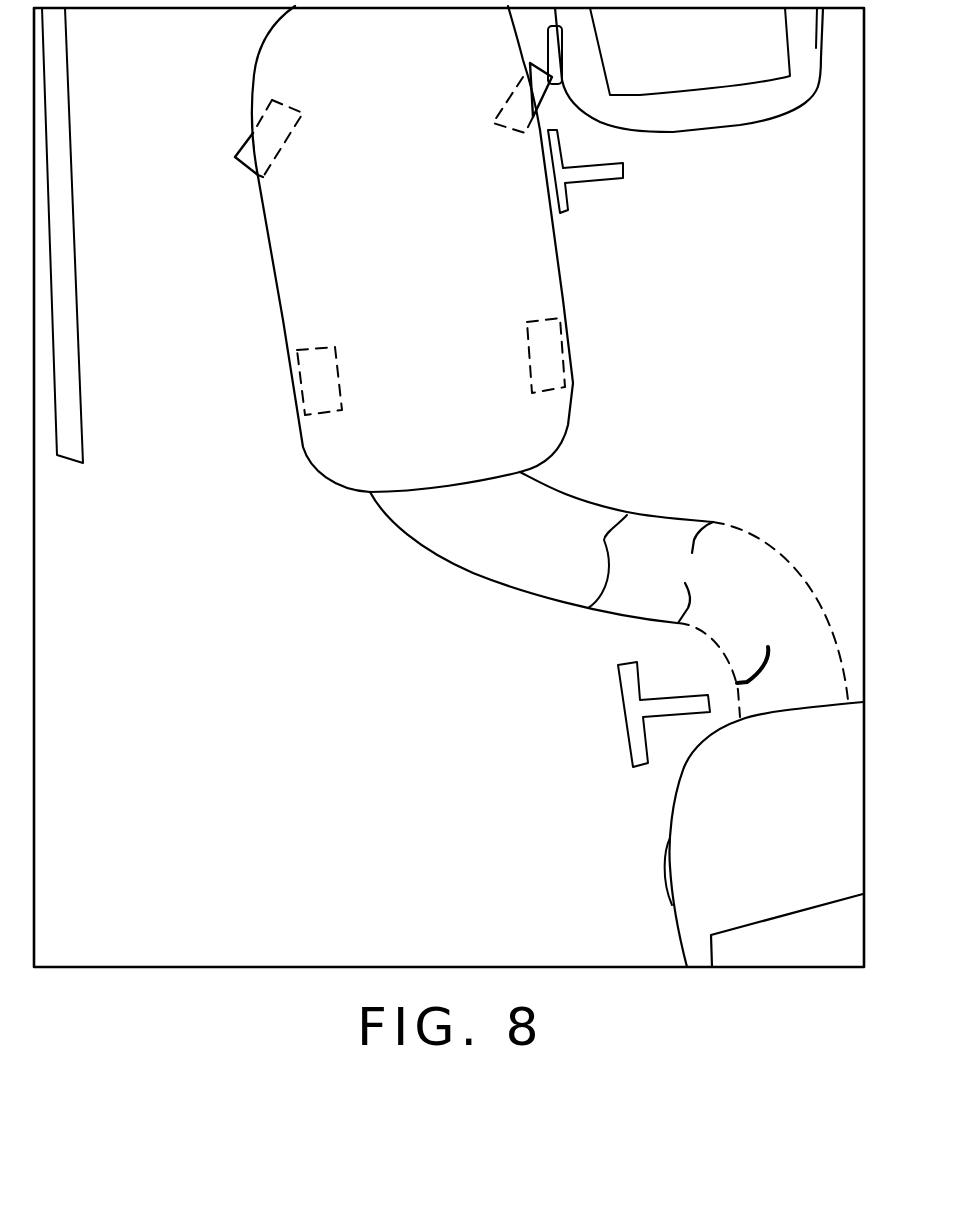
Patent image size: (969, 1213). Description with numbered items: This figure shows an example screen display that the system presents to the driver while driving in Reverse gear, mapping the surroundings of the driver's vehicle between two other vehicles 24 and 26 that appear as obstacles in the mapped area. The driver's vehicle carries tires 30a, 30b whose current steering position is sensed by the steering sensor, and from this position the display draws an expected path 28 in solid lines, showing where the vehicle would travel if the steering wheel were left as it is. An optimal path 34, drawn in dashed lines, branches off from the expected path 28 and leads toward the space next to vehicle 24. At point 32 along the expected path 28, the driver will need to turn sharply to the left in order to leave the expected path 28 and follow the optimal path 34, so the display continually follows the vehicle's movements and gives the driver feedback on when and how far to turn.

The vehicle 24 is at (695, 817).
The vehicle 26 is at (768, 101).
The expected path 28 is at (604, 538).
The tire 30a is at (237, 160).
The tire 30b is at (512, 127).
The point 32 is at (690, 572).
The optimal path 34 is at (827, 625).